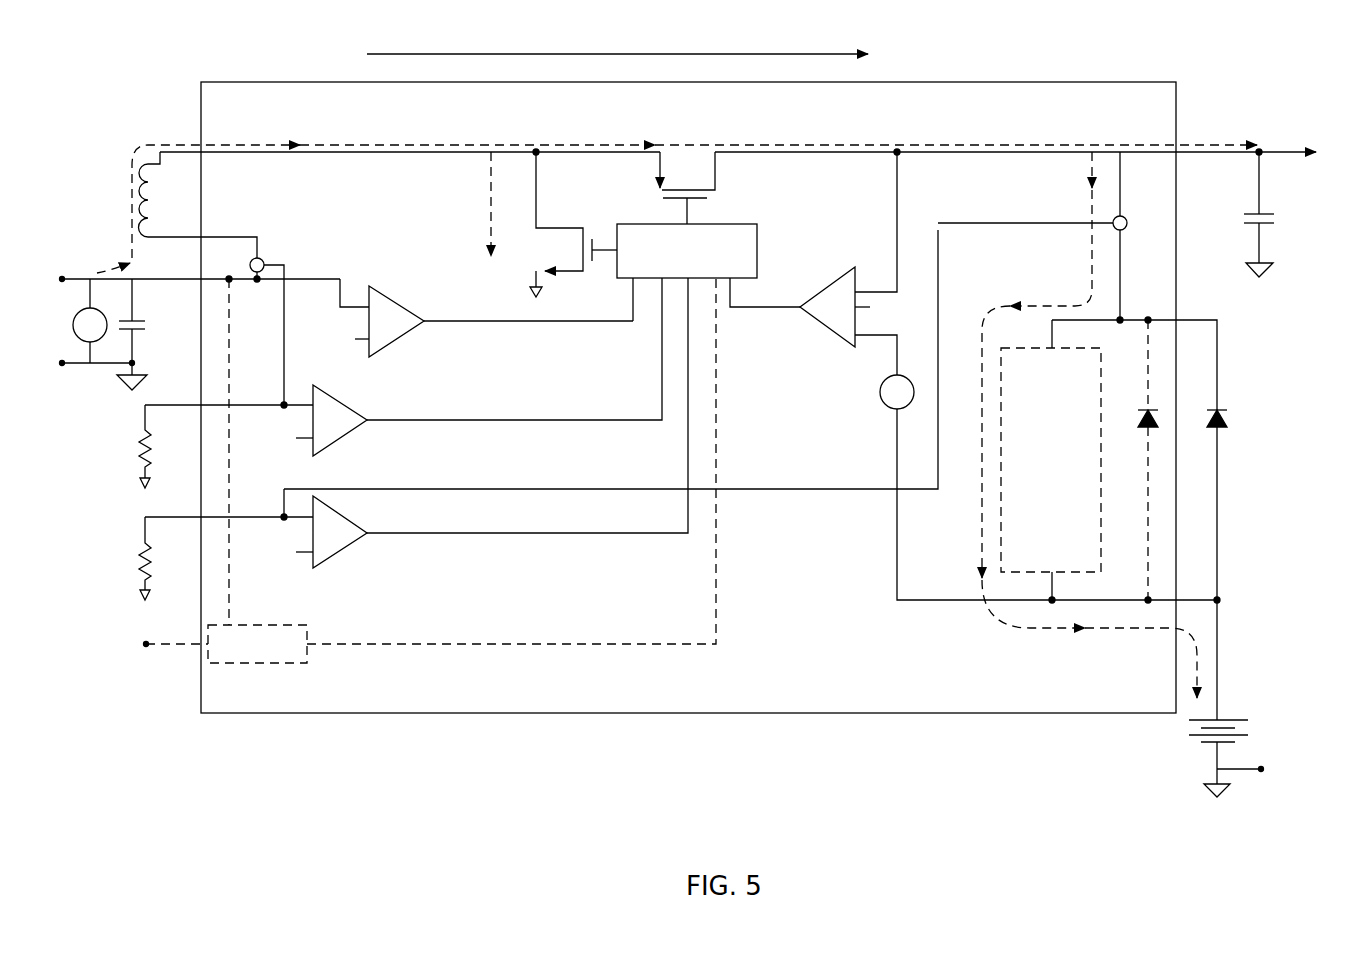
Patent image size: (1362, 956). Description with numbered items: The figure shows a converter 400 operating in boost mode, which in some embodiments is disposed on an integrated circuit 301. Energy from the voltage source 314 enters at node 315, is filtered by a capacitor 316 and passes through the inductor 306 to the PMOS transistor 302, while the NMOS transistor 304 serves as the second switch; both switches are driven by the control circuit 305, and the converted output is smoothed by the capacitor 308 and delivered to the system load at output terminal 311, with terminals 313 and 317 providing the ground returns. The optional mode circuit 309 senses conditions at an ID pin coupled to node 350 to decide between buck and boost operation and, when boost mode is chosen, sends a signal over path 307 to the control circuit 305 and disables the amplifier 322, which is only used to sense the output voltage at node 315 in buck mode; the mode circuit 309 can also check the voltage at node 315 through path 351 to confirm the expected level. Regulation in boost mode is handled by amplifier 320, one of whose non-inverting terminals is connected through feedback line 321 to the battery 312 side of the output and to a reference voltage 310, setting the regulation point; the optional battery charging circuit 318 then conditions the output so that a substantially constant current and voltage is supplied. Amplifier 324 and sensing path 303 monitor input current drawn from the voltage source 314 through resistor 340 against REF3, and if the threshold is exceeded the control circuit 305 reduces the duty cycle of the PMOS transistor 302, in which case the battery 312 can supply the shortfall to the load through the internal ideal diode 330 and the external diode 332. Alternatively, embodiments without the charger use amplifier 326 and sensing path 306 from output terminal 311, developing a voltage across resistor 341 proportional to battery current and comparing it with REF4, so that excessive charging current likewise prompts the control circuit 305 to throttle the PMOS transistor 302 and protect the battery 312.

The converter 400 is at (1283, 40).
The integrated circuit 301 is at (952, 82).
The PMOS transistor 302 is at (695, 150).
The sensing path 303 is at (284, 267).
The NMOS transistor 304 is at (547, 252).
The control circuit 305 is at (757, 250).
The inductor 306 is at (132, 193).
The mode signal line 307 is at (507, 643).
The capacitor 308 is at (1240, 218).
The mode circuit 309 is at (310, 625).
The reference voltage 310 is at (879, 398).
The output terminal 311 is at (1280, 150).
The battery 312 is at (1259, 713).
The terminal 313 is at (1274, 771).
The voltage source 314 is at (66, 330).
The node 315 is at (78, 275).
The input capacitor 316 is at (153, 321).
The terminal 317 is at (53, 350).
The battery charging circuit 318 is at (998, 502).
The amplifier 320 is at (830, 333).
The feedback line 321 is at (897, 203).
The amplifier 322 is at (383, 288).
The amplifier 324 is at (340, 395).
The amplifier 326 is at (355, 518).
The ideal diode 330 is at (1142, 398).
The external diode 332 is at (1222, 406).
The resistor 340 is at (136, 448).
The resistor 341 is at (135, 562).
The node 350 is at (130, 643).
The path 351 is at (231, 363).